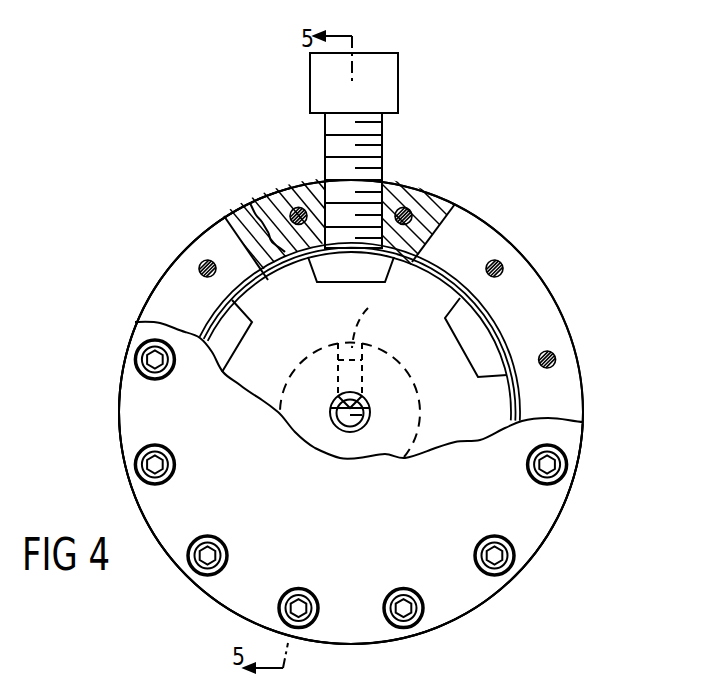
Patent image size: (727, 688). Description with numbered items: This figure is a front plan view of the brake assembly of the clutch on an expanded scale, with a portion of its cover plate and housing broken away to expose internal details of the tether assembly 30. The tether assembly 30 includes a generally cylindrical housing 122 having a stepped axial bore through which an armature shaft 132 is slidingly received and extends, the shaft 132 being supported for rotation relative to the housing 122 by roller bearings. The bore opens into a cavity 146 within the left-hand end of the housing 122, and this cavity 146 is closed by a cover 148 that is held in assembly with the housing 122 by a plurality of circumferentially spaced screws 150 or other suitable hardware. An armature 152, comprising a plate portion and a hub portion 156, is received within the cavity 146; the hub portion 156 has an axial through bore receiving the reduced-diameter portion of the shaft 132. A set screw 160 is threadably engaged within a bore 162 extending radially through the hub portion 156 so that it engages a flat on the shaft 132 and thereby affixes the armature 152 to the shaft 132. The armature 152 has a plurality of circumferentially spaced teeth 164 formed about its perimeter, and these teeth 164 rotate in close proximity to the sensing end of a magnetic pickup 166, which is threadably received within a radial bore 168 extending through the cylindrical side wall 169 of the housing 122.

The tether assembly 30 is at (656, 378).
The housing 122 is at (498, 231).
The armature shaft 132 is at (352, 416).
The cavity 146 is at (477, 342).
The cover 148 is at (533, 530).
The screws 150 is at (503, 268).
The armature 152 is at (470, 412).
The hub portion 156 is at (293, 372).
The set screw 160 is at (358, 404).
The bore 162 is at (367, 309).
The teeth 164 is at (224, 216).
The magnetic pickup 166 is at (383, 72).
The radial bore 168 is at (381, 181).
The cylindrical side wall 169 is at (175, 277).